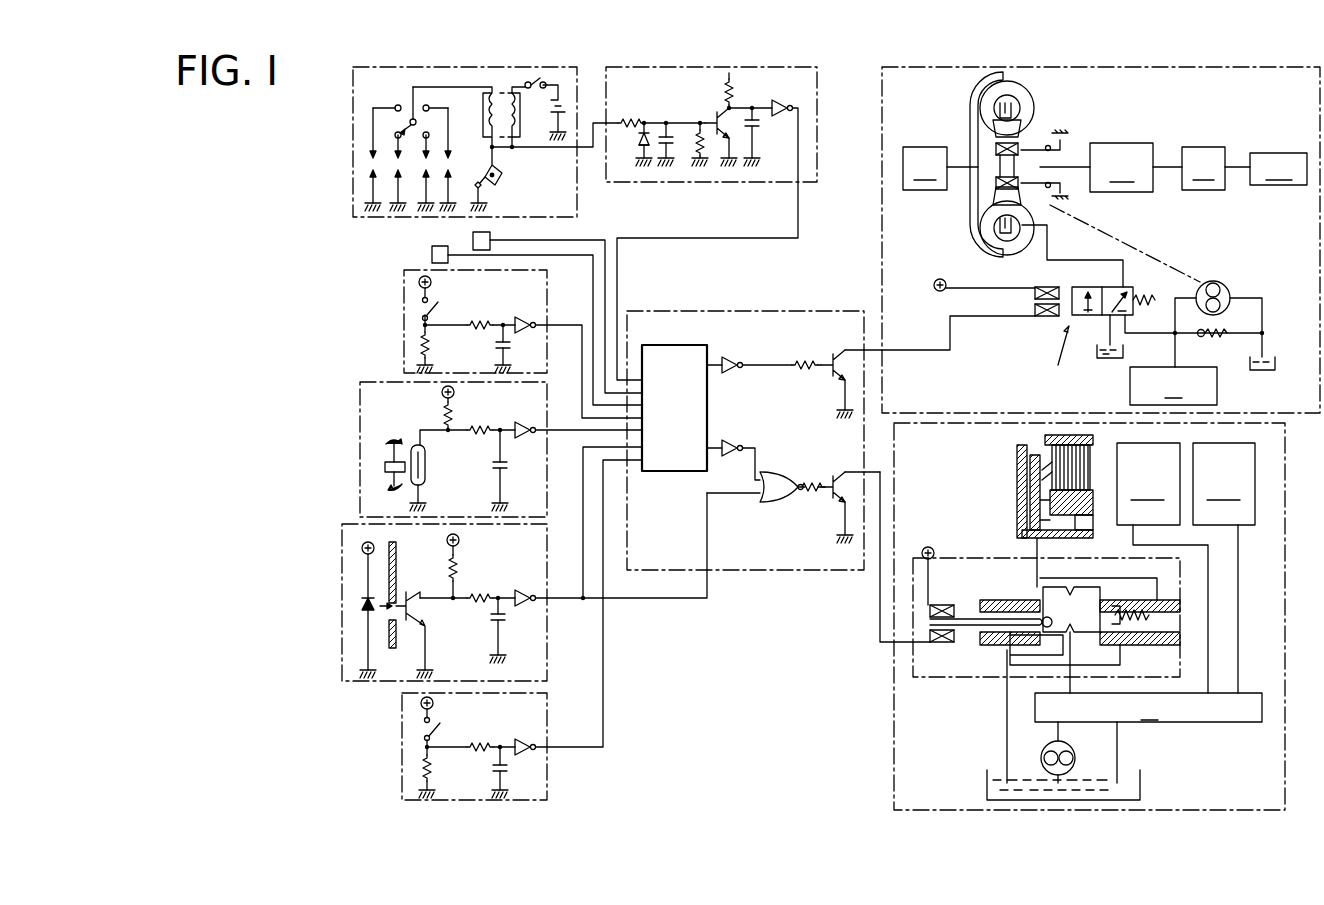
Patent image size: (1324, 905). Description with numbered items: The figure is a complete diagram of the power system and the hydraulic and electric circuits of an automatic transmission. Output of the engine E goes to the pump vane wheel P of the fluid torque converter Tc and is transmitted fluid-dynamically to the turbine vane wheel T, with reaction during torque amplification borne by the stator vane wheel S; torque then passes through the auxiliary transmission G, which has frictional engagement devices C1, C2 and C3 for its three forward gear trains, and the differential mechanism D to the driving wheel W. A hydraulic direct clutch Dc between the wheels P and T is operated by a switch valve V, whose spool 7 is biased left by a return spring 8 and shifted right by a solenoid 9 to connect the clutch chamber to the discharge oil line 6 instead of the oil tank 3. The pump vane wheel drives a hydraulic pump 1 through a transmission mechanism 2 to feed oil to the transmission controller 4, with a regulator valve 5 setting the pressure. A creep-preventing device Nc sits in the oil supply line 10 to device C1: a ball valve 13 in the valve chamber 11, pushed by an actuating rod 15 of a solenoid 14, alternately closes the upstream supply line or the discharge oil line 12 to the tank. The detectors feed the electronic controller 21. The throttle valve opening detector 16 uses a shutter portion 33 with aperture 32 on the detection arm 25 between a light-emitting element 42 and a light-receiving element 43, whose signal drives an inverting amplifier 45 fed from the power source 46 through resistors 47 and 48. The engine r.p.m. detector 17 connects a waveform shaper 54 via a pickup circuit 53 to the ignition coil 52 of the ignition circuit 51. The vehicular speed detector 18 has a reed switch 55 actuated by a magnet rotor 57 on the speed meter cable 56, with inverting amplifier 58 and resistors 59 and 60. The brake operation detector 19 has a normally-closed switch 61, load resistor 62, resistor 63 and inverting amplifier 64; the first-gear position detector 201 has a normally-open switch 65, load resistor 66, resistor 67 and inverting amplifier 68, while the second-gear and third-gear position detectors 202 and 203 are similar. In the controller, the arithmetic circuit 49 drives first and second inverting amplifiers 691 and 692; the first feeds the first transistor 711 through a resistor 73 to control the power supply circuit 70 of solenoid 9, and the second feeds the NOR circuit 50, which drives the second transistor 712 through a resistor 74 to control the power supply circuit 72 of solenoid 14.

The hydraulic pump 1 is at (1213, 281).
The transmission mechanism 2 is at (1112, 250).
The oil tank 3 is at (1097, 352).
The transmission controller 4 is at (1148, 527).
The regulator valve 5 is at (1202, 338).
The oil line 6 is at (1144, 342).
The spool 7 is at (1090, 287).
The return spring 8 is at (1144, 286).
The solenoid 9 is at (1045, 318).
The oil supply line 10 is at (1037, 576).
The valve chamber 11 is at (1040, 622).
The discharge oil line 12 is at (1007, 672).
The ball valve 13 is at (1056, 643).
The solenoid 14 is at (940, 644).
The actuating rod 15 is at (964, 618).
The throttle valve opening detector 16 is at (335, 586).
The engine r.p.m. detector 17 is at (675, 193).
The vehicular speed detector 18 is at (353, 414).
The brake operation detector 19 is at (395, 743).
The electronic controller 21 is at (766, 306).
The detection arm 25 is at (397, 547).
The aperture 32 is at (404, 596).
The shutter portion 33 is at (397, 630).
The light-emitting element 42 is at (361, 606).
The light-receiving element 43 is at (420, 608).
The inverting amplifier 45 is at (523, 584).
The power source 46 is at (431, 282).
The resistor 47 is at (458, 572).
The resistor 48 is at (482, 608).
The arithmetic circuit 49 is at (684, 424).
The NOR circuit 50 is at (790, 484).
The ignition circuit 51 is at (584, 215).
The ignition coil 52 is at (512, 148).
The pickup circuit 53 is at (590, 147).
The waveform shaper 54 is at (620, 183).
The reed switch 55 is at (426, 475).
The speed meter cable 56 is at (381, 493).
The magnet rotor 57 is at (383, 462).
The inverting amplifier 58 is at (524, 419).
The resistor 59 is at (453, 412).
The resistor 60 is at (478, 440).
The normally-closed switch 61 is at (445, 728).
The load resistor 62 is at (432, 775).
The resistor 63 is at (471, 766).
The inverting amplifier 64 is at (523, 733).
The normally-open switch 65 is at (444, 306).
The load resistor 66 is at (430, 345).
The resistor 67 is at (470, 311).
The inverting amplifier 68 is at (524, 313).
The power supply circuit 70 is at (905, 350).
The power supply circuit 72 is at (880, 618).
The resistor 73 is at (800, 362).
The resistor 74 is at (811, 475).
The first-gear position detector 201 is at (397, 314).
The second-gear position detector 202 is at (432, 255).
The third-gear position detector 203 is at (473, 240).
The first inverting amplifier 691 is at (743, 353).
The second inverting amplifier 692 is at (737, 437).
The first transistor 711 is at (840, 357).
The second transistor 712 is at (842, 475).
The engine E is at (925, 168).
The turbine vane wheel T is at (985, 100).
The fluid torque converter Tc is at (1036, 101).
The stator vane wheel S is at (995, 125).
The pump vane wheel P is at (1035, 112).
The hydraulic direct clutch Dc is at (1010, 240).
The auxiliary transmission G is at (1121, 167).
The differential mechanism D is at (1203, 168).
The driving wheel W is at (1278, 169).
The switch valve V is at (1059, 354).
The frictional engagement device C1 is at (1013, 473).
The frictional engagement device C2 is at (1162, 568).
The frictional engagement device C3 is at (1224, 568).
The creep-preventing device Nc is at (970, 557).